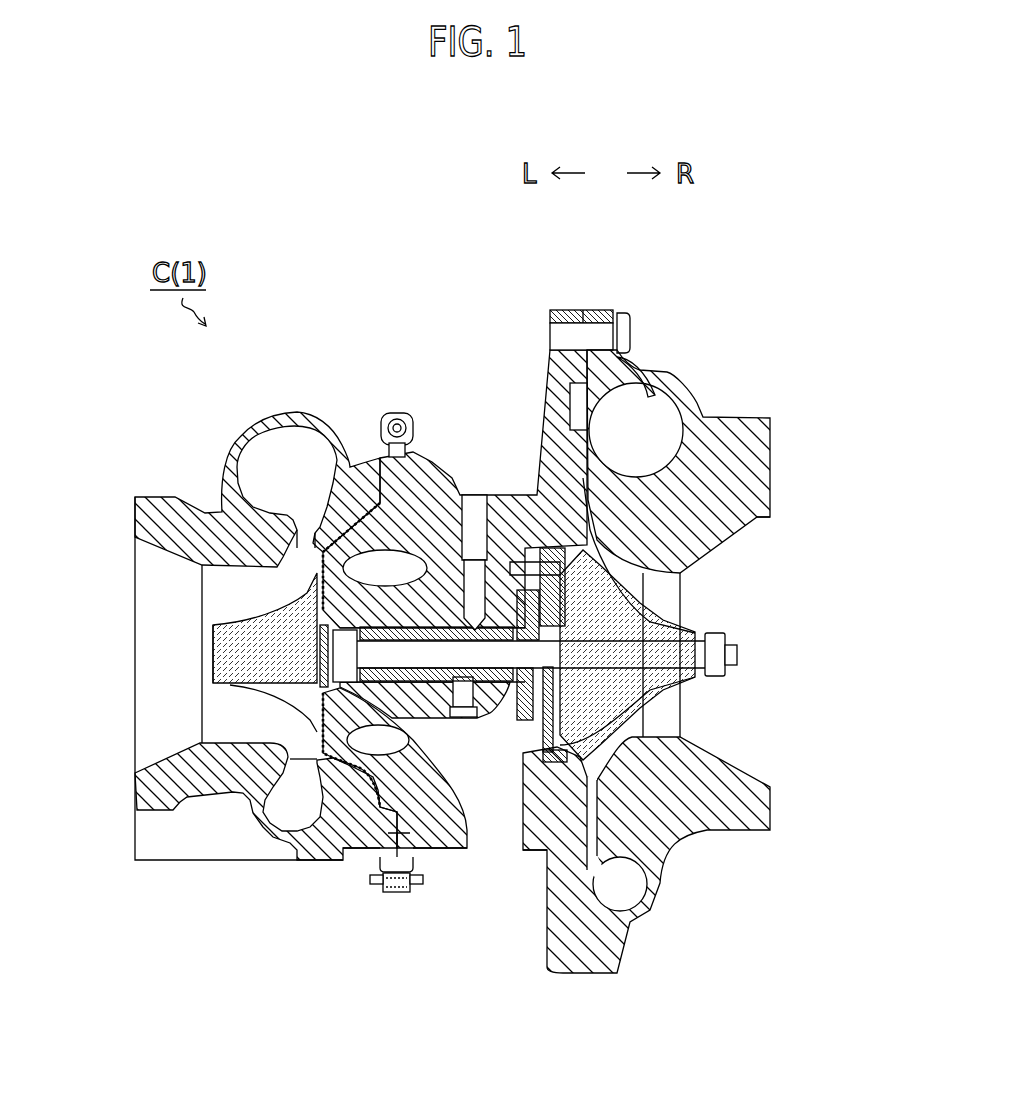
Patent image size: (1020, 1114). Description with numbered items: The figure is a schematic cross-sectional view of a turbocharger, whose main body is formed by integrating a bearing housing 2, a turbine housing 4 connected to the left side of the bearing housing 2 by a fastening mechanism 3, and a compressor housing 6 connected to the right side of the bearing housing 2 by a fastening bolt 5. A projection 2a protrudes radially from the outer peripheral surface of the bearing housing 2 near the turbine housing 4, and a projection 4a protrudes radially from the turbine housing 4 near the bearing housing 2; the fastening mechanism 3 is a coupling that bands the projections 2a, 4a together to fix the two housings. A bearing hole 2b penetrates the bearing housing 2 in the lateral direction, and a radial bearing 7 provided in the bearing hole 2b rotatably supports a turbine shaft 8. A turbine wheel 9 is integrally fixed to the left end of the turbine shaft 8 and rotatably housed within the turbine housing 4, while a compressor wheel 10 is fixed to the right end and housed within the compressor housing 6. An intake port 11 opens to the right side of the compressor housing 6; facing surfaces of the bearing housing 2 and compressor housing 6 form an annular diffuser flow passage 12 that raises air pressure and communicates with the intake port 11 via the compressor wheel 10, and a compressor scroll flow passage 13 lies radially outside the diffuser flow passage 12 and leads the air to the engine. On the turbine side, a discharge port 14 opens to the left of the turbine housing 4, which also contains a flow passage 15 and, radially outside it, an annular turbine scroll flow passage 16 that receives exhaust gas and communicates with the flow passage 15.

The bearing housing 2 is at (507, 507).
The projection 2a is at (417, 865).
The bearing hole 2b is at (440, 690).
The fastening mechanism 3 is at (397, 411).
The turbine housing 4 is at (332, 412).
The projection 4a is at (380, 865).
The fastening bolt 5 is at (617, 308).
The compressor housing 6 is at (745, 418).
The radial bearing 7 is at (440, 612).
The turbine shaft 8 is at (460, 693).
The turbine wheel 9 is at (250, 728).
The compressor wheel 10 is at (700, 604).
The intake port 11 is at (742, 533).
The diffuser flow passage 12 is at (612, 480).
The compressor scroll flow passage 13 is at (655, 395).
The discharge port 14 is at (145, 549).
The flow passage 15 is at (295, 523).
The turbine scroll flow passage 16 is at (270, 445).